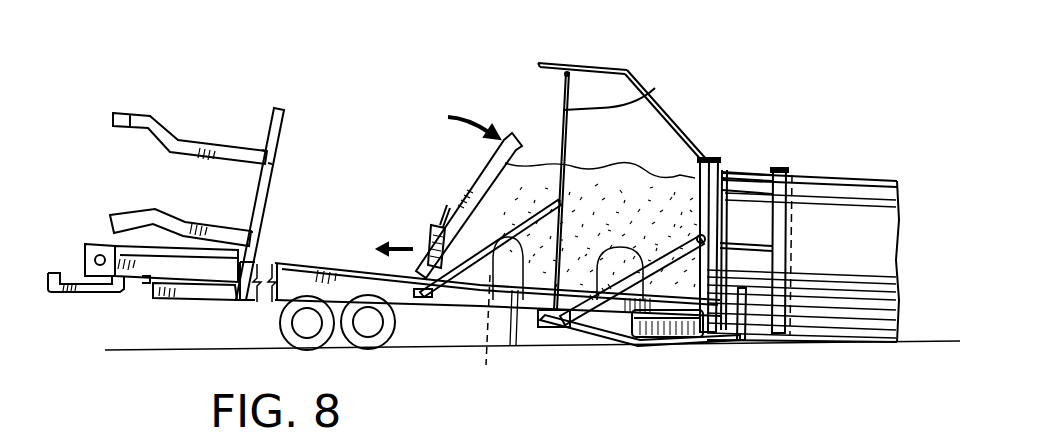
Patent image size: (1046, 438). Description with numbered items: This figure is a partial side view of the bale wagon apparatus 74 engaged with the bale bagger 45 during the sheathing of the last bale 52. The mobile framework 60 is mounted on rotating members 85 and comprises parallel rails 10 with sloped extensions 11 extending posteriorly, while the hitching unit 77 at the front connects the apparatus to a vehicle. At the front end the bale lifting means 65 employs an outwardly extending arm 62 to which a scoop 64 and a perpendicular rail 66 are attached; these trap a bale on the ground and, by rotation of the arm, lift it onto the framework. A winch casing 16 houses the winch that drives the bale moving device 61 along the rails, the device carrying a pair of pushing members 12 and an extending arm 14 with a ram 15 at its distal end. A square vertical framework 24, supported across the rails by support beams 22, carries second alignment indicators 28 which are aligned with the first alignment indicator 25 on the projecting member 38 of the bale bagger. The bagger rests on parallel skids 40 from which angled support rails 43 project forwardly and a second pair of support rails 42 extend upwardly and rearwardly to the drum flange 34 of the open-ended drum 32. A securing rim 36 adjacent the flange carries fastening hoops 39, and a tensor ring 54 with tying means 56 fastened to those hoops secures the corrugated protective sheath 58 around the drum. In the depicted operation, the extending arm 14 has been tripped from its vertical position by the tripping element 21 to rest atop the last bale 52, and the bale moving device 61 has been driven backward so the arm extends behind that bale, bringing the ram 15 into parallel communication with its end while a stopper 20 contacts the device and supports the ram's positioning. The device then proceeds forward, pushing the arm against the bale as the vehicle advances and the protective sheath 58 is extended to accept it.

The parallel rails 10 is at (297, 262).
The sloped extensions 11 is at (345, 268).
The pushing members 12 is at (453, 218).
The extending arm 14 is at (475, 188).
The ram 15 is at (498, 132).
The winch casing 16 is at (96, 246).
The stopper 20 is at (445, 263).
The tripping element 21 is at (500, 336).
The support beams 22 is at (516, 330).
The square vertical framework 24 is at (642, 92).
The first alignment indicator 25 is at (535, 62).
The second alignment indicators 28 is at (565, 75).
The open-ended drum 32 is at (745, 290).
The drum flange 34 is at (707, 177).
The securing rim 36 is at (737, 197).
The projecting member 38 is at (677, 123).
The fastening hoops 39 is at (735, 173).
The parallel skids 40 is at (685, 345).
The second pair of support rails 42 is at (597, 300).
The angled support rails 43 is at (613, 347).
The bale bagger 45 is at (786, 128).
The bales 52 is at (608, 178).
The tensor ring 54 is at (830, 178).
The tying means 56 is at (767, 243).
The protective sheath 58 is at (882, 178).
The mobile framework 60 is at (428, 315).
The bale moving device 61 is at (403, 229).
The outwardly extending arm 62 is at (267, 110).
The scoop 64 is at (128, 122).
The bale lifting means 65 is at (105, 110).
The perpendicular rail 66 is at (128, 215).
The bale wagon apparatus 74 is at (365, 100).
The hitching unit 77 is at (102, 297).
The rotating members 85 is at (307, 323).